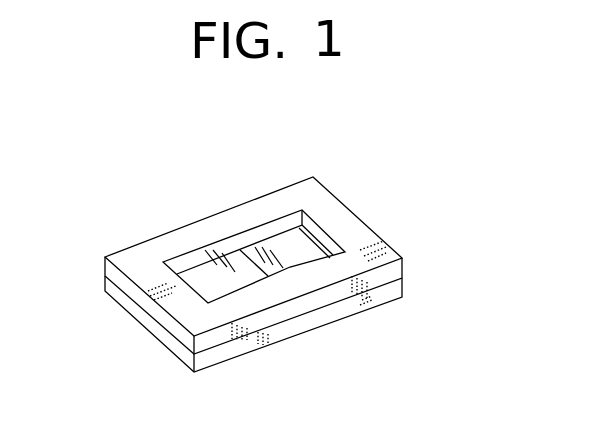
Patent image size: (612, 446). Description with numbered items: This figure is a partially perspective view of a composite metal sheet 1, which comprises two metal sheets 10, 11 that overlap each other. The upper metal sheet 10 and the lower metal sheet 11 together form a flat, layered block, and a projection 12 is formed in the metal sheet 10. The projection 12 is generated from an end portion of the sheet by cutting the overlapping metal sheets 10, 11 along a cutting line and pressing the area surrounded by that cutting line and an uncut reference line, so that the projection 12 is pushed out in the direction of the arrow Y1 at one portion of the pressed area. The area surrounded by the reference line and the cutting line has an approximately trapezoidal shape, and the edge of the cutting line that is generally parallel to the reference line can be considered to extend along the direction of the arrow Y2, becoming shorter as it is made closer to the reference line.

The composite metal sheet 1 is at (290, 260).
The metal sheet 10 is at (130, 259).
The metal sheet 11 is at (158, 338).
The projection 12 is at (200, 277).
The arrow Y1 is at (437, 270).
The arrow Y2 is at (79, 374).